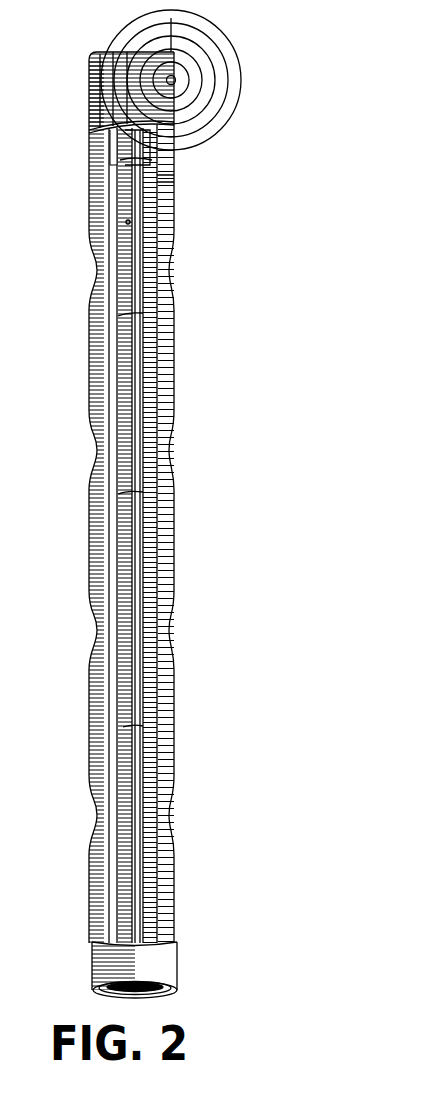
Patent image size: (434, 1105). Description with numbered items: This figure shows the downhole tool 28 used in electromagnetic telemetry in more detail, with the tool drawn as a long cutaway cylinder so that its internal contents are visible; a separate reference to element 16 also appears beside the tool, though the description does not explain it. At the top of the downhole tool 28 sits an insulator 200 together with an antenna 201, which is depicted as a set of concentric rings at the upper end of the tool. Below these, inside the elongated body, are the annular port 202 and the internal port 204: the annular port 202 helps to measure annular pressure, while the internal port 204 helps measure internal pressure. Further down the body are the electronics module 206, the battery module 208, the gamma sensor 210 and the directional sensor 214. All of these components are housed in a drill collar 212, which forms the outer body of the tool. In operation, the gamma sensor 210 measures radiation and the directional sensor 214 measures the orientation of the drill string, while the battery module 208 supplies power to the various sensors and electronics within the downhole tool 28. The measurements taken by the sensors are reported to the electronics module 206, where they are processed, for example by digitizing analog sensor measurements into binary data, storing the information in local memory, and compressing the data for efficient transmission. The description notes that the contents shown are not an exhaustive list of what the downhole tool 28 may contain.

The elongated shaft 16 is at (0, 447).
The downhole tool 28 is at (83, 835).
The insulator 200 is at (165, 80).
The antenna 201 is at (203, 62).
The annular port 202 is at (176, 185).
The internal port 204 is at (128, 222).
The electronics module 206 is at (138, 310).
The battery module 208 is at (137, 458).
The gamma sensor 210 is at (145, 656).
The drill collar 212 is at (172, 748).
The directional sensor 214 is at (140, 870).